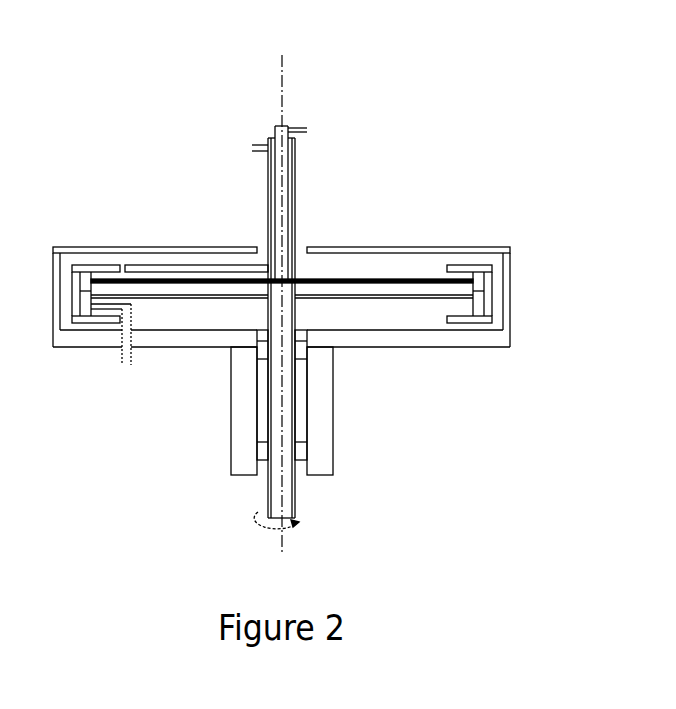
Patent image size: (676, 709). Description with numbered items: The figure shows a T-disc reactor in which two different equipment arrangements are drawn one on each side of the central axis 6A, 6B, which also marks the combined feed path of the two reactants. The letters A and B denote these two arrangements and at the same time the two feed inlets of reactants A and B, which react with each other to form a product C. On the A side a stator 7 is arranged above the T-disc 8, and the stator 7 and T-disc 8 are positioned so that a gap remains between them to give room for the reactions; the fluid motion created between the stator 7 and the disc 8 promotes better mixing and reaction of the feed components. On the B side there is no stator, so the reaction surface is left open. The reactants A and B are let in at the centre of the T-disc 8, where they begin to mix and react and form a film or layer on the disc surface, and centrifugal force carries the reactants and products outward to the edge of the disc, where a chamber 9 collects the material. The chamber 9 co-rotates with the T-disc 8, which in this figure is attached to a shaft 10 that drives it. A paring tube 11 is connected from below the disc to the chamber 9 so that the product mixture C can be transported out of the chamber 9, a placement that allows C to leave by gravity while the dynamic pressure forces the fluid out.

The stator 7 is at (180, 262).
The T-disc 8 is at (419, 275).
The chamber 9 is at (490, 281).
The shaft 10 is at (368, 331).
The paring tube 11 is at (114, 356).
The axis 6A is at (375, 322).
The axis 6B is at (293, 390).
The reactant feed inlet A is at (242, 148).
The reactant feed inlet B is at (317, 130).
The product C is at (127, 368).